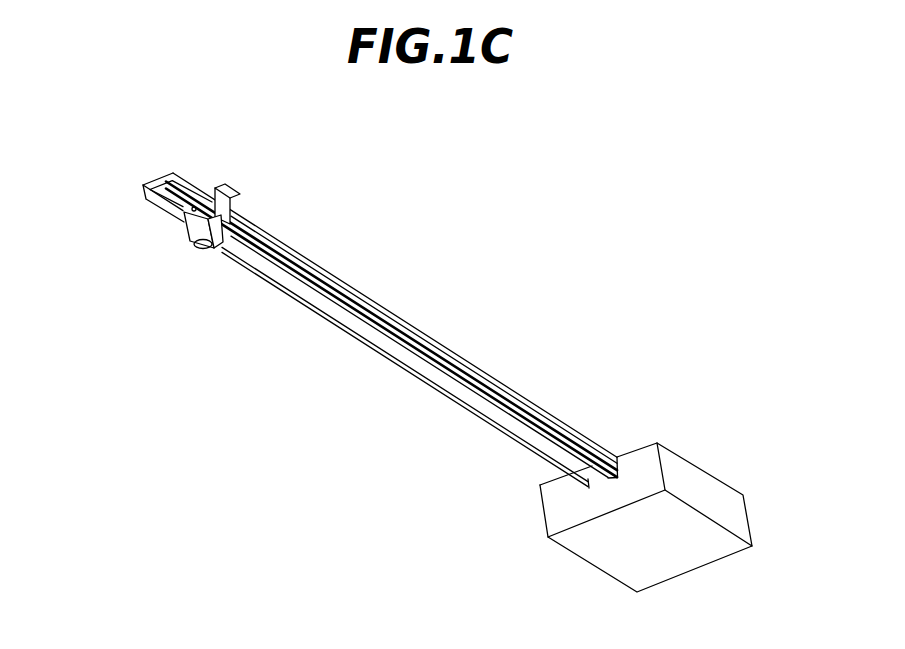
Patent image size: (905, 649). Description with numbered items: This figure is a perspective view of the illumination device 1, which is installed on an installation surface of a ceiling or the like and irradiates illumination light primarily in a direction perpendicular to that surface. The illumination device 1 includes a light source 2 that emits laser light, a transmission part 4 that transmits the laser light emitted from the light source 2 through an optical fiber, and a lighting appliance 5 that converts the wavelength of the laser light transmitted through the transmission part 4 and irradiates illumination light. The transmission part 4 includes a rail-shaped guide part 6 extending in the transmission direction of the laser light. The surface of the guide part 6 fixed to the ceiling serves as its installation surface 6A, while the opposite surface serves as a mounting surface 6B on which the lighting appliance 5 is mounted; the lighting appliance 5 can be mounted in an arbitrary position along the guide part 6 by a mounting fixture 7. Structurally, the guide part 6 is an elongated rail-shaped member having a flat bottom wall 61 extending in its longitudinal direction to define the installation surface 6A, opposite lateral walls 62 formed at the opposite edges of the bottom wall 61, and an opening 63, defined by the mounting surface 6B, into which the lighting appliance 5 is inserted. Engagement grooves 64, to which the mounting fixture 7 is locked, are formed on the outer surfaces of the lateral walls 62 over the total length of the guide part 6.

The illumination device 1 is at (192, 108).
The light source 2 is at (634, 448).
The transmission part 4 is at (402, 318).
The lighting appliance 5 is at (196, 246).
The guide part 6 is at (392, 313).
The installation surface 6A is at (232, 160).
The mounting surface 6B is at (152, 181).
The mounting fixture 7 is at (218, 204).
The bottom wall 61 is at (392, 313).
The lateral walls 62 is at (315, 267).
The opening 63 is at (153, 169).
The engagement grooves 64 is at (508, 393).